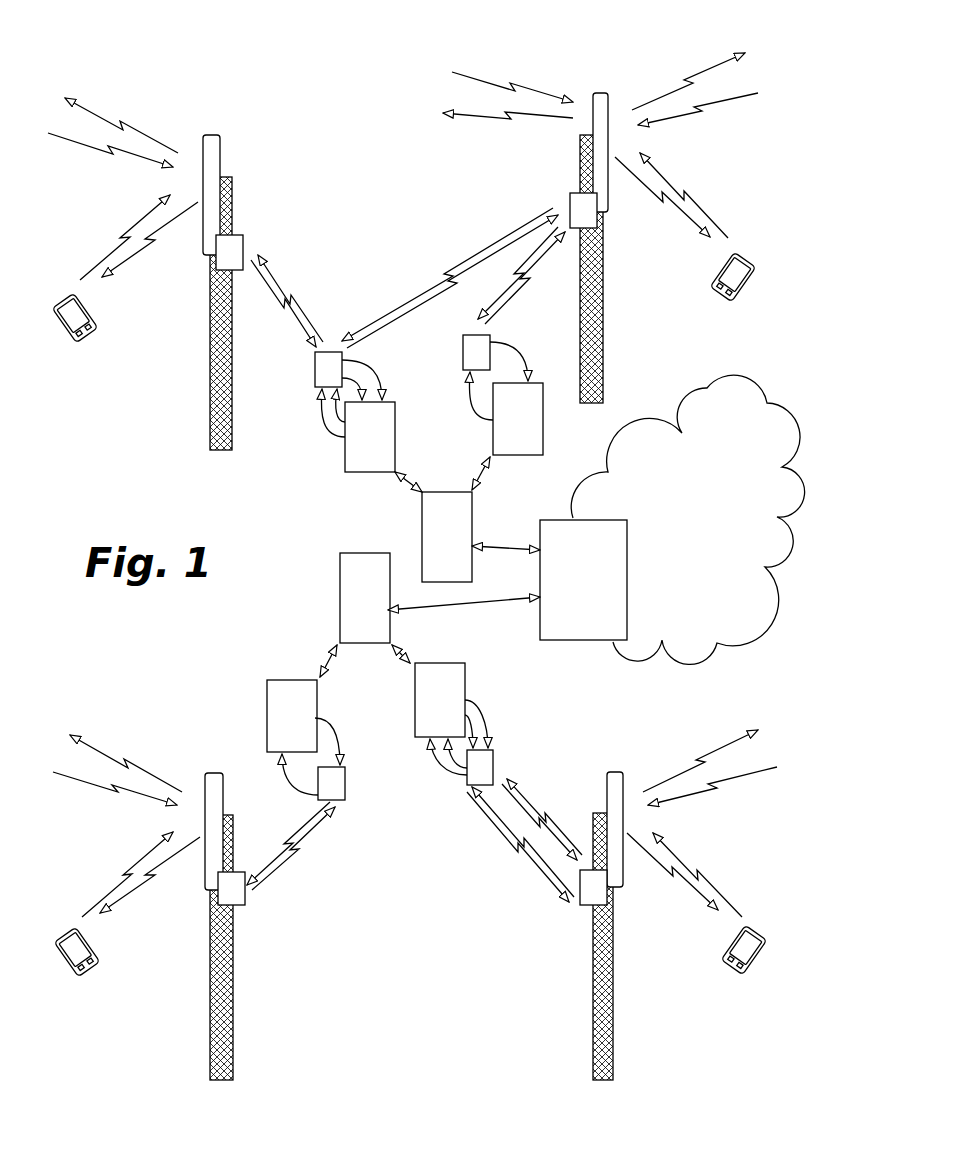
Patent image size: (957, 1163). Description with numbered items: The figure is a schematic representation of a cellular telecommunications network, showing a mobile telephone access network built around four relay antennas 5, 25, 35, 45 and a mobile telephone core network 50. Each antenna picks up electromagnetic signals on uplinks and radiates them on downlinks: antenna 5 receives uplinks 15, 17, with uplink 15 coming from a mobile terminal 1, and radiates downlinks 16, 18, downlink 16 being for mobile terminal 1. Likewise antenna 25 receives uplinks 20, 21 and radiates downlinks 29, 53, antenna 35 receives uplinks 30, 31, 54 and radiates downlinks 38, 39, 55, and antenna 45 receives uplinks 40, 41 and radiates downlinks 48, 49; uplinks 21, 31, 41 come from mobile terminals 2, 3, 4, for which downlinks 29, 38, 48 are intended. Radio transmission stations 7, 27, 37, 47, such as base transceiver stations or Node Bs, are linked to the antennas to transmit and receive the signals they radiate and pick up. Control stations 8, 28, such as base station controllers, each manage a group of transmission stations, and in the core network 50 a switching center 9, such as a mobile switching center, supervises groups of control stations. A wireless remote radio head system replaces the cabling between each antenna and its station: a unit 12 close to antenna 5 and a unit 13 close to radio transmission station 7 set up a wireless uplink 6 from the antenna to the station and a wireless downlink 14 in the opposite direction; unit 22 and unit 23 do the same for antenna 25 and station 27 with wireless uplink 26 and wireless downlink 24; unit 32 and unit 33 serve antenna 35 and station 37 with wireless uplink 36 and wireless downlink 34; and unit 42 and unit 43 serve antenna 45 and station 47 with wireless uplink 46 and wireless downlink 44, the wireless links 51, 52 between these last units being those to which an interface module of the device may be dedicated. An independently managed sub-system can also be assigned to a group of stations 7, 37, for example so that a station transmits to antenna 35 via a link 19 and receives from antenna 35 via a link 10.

The mobile terminal 1 is at (95, 318).
The mobile terminal 2 is at (97, 952).
The mobile terminal 3 is at (712, 275).
The mobile terminal 4 is at (725, 950).
The relay antenna 5 is at (222, 150).
The relay antenna 25 is at (213, 773).
The relay antenna 35 is at (600, 92).
The relay antenna 45 is at (613, 772).
The unit 12 is at (245, 243).
The unit 22 is at (246, 902).
The unit 32 is at (570, 205).
The unit 42 is at (582, 905).
The unit 13 is at (315, 370).
The unit 23 is at (345, 785).
The unit 33 is at (463, 360).
The unit 43 is at (493, 760).
The radio transmission station 7 is at (345, 455).
The radio transmission station 27 is at (267, 710).
The radio transmission station 37 is at (493, 437).
The radio transmission station 47 is at (415, 697).
The control station 8 is at (422, 532).
The control station 28 is at (340, 595).
The switching center 9 is at (582, 640).
The mobile telephone core network 50 is at (690, 368).
The wireless uplink 6 is at (290, 318).
The wireless downlink 14 is at (292, 296).
The link 10 is at (475, 245).
The link 19 is at (430, 305).
The wireless downlink 34 is at (500, 295).
The wireless uplink 36 is at (515, 300).
The wireless downlink 24 is at (293, 833).
The wireless uplink 26 is at (287, 865).
The wireless downlink 44 is at (527, 797).
The wireless uplink 46 is at (540, 810).
The wireless link 51 is at (540, 860).
The wireless link 52 is at (487, 822).
The uplink 15 is at (100, 250).
The downlink 16 is at (125, 262).
The uplink 17 is at (73, 142).
The downlink 18 is at (100, 108).
The uplink 20 is at (80, 780).
The uplink 21 is at (100, 892).
The downlink 29 is at (122, 900).
The downlink 53 is at (100, 745).
The uplink 30 is at (738, 98).
The uplink 31 is at (675, 175).
The downlink 38 is at (688, 220).
The downlink 39 is at (713, 60).
The uplink 54 is at (528, 88).
The downlink 55 is at (477, 120).
The uplink 40 is at (745, 778).
The uplink 41 is at (686, 858).
The downlink 48 is at (657, 865).
The downlink 49 is at (725, 745).